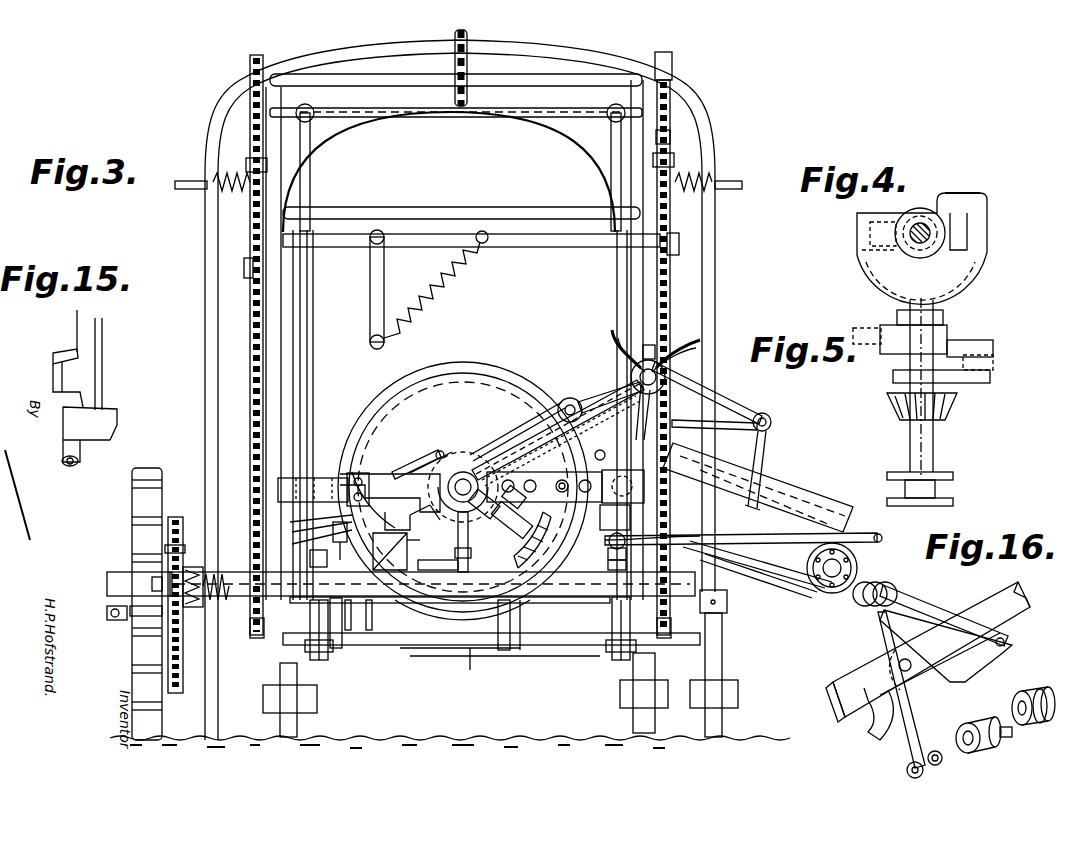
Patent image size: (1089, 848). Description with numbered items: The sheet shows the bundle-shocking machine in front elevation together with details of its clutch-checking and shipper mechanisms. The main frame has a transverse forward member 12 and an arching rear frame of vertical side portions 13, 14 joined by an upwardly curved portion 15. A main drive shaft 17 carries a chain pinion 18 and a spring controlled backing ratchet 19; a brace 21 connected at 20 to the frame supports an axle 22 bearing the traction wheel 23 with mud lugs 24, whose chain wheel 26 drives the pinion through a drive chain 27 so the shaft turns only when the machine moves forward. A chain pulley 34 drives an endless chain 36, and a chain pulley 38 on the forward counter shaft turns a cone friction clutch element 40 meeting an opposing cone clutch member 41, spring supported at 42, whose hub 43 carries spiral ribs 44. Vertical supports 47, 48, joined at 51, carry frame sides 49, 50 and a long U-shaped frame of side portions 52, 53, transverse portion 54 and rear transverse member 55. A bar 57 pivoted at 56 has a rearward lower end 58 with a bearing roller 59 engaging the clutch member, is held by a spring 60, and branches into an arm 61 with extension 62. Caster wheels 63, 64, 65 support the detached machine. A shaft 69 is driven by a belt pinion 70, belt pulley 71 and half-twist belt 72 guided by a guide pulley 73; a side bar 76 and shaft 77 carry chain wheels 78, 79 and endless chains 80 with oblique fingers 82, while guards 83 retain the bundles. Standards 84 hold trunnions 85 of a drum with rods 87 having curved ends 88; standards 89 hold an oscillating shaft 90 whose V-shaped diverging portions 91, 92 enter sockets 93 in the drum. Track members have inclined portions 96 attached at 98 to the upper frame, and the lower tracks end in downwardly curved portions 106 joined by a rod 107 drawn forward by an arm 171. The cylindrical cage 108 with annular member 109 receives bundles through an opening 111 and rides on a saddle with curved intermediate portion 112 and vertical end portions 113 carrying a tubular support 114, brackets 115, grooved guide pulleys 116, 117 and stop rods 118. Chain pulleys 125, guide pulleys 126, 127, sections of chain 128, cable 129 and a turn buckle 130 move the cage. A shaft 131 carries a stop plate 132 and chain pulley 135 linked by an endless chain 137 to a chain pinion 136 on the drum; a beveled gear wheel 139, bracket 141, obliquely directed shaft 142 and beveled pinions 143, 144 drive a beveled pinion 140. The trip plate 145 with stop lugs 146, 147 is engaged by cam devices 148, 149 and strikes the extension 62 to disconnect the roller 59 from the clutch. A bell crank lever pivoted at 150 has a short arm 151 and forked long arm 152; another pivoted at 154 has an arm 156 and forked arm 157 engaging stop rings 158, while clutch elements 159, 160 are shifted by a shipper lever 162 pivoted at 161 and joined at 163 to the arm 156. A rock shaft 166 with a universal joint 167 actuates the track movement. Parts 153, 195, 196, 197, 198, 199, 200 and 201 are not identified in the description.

In FIG. 3, the transverse forward member 12 is at (676, 572).
In FIG. 3, the vertical side portion 13 is at (715, 292).
In FIG. 3, the vertical side portion 14 is at (205, 346).
In FIG. 3, the transverse upwardly curved portion 15 is at (590, 54).
In FIG. 3, the main drive shaft 17 is at (228, 600).
In FIG. 3, the chain pinion 18 is at (186, 566).
In FIG. 3, the spring controlled backing ratchet 19 is at (190, 604).
In FIG. 3, the brace connection 20 is at (152, 585).
In FIG. 3, the brace 21 is at (107, 590).
In FIG. 3, the axle 22 is at (118, 620).
In FIG. 3, the traction or bearing wheel 23 is at (132, 523).
In FIG. 3, the mud lugs 24 is at (132, 494).
In FIG. 3, the chain wheel 26 is at (183, 528).
In FIG. 3, the drive chain 27 is at (184, 548).
In FIG. 3, the chain pulley 34 is at (470, 556).
In FIG. 3, the endless chain 36 is at (453, 542).
In FIG. 3, the chain pulley 38 is at (310, 558).
In FIG. 3, the cone friction clutch element 40 is at (416, 537).
In FIG. 3, the opposing cone friction clutch member 41 is at (390, 544).
In FIG. 3, the spring 42 is at (438, 557).
In FIG. 3, the hub 43 is at (348, 630).
In FIG. 3, the spiral ribs 44 is at (370, 630).
In FIG. 3, the vertical support 47 is at (620, 296).
In FIG. 3, the vertical support 48 is at (302, 336).
In FIG. 3, the side 49 is at (320, 478).
In FIG. 3, the side 50 is at (365, 475).
In FIG. 16, the side 50 is at (846, 682).
In FIG. 3, the upper connecting portion 51 is at (512, 207).
In FIG. 3, the side portion 52 is at (604, 140).
In FIG. 3, the side portion 53 is at (326, 142).
In FIG. 3, the transverse portion 54 is at (540, 247).
In FIG. 3, the transverse member 55 is at (566, 104).
In FIG. 3, the pivot 56 is at (370, 242).
In FIG. 3, the bar 57 is at (370, 287).
In FIG. 15, the bar 57 is at (98, 340).
In FIG. 3, the rearwardly directed lower end 58 is at (397, 517).
In FIG. 15, the rearwardly directed lower end 58 is at (88, 432).
In FIG. 3, the bearing roller 59 is at (329, 531).
In FIG. 3, the spring 60 is at (430, 296).
In FIG. 3, the arm 61 is at (420, 512).
In FIG. 15, the arm 61 is at (58, 378).
In FIG. 3, the forwardly directed extension 62 is at (439, 514).
In FIG. 15, the forwardly directed extension 62 is at (60, 352).
In FIG. 3, the caster wheel 63 is at (728, 611).
In FIG. 3, the caster wheel 64 is at (633, 715).
In FIG. 3, the caster wheel 65 is at (298, 716).
In FIG. 3, the shaft 69 is at (632, 503).
In FIG. 3, the belt pinion 70 is at (634, 564).
In FIG. 16, the belt pinion 70 is at (1034, 692).
In FIG. 3, the belt pulley 71 is at (601, 448).
In FIG. 3, the belt 72 is at (634, 553).
In FIG. 3, the guide pulley 73 is at (611, 550).
In FIG. 3, the side bar 76 is at (760, 585).
In FIG. 3, the shaft 77 is at (834, 588).
In FIG. 3, the chain wheel 78 is at (630, 518).
In FIG. 3, the chain wheel 79 is at (850, 560).
In FIG. 3, the endless chains 80 is at (758, 580).
In FIG. 3, the fingers 82 is at (805, 492).
In FIG. 3, the guide boards or guards 83 is at (780, 480).
In FIG. 3, the standards 84 is at (660, 408).
In FIG. 3, the trunnions 85 is at (665, 382).
In FIG. 3, the fingers or rods 87 is at (614, 345).
In FIG. 3, the curved outer ends 88 is at (612, 330).
In FIG. 3, the standards 89 is at (772, 452).
In FIG. 3, the shaft 90 is at (768, 418).
In FIG. 3, the diverging portion 91 is at (738, 398).
In FIG. 3, the diverging portion 92 is at (714, 417).
In FIG. 3, the sockets 93 is at (652, 344).
In FIG. 3, the inclined portion 96 is at (314, 395).
In FIG. 3, the attachment 98 is at (310, 112).
In FIG. 3, the downwardly curved portions 106 is at (305, 646).
In FIG. 3, the rod 107 is at (440, 650).
In FIG. 3, the cage 108 is at (484, 370).
In FIG. 3, the annular member 109 is at (444, 372).
In FIG. 3, the opening 111 is at (522, 410).
In FIG. 3, the curved intermediate portion 112 is at (504, 650).
In FIG. 3, the vertical end portions 113 is at (454, 573).
In FIG. 3, the tubular support 114 is at (455, 656).
In FIG. 3, the brackets 115 is at (461, 638).
In FIG. 3, the grooved guide pulley 116 is at (310, 620).
In FIG. 3, the grooved guide pulley 117 is at (312, 633).
In FIG. 3, the stop rod 118 is at (540, 660).
In FIG. 3, the chain pulleys 125 is at (680, 622).
In FIG. 3, the guide pulleys 126 is at (673, 68).
In FIG. 3, the guide pulleys 127 is at (251, 262).
In FIG. 3, the sections of chain 128 is at (255, 315).
In FIG. 3, the section of cable 129 is at (676, 135).
In FIG. 3, the turn buckle 130 is at (250, 164).
In FIG. 3, the shaft 131 is at (461, 478).
In FIG. 4, the shaft 131 is at (923, 223).
In FIG. 5, the shaft 131 is at (936, 332).
In FIG. 3, the stop plate 132 is at (500, 400).
In FIG. 3, the chain pulley 135 is at (559, 438).
In FIG. 3, the chain pinion 136 is at (620, 380).
In FIG. 3, the endless chain 137 is at (538, 403).
In FIG. 3, the beveled gear wheel 139 is at (520, 600).
In FIG. 5, the beveled pinion 140 is at (887, 410).
In FIG. 3, the bracket 141 is at (514, 496).
In FIG. 3, the obliquely directed shaft 142 is at (511, 519).
In FIG. 3, the beveled pinion 143 is at (483, 512).
In FIG. 3, the beveled pinion 144 is at (528, 548).
In FIG. 3, the plate 145 is at (430, 496).
In FIG. 4, the plate 145 is at (975, 272).
In FIG. 5, the plate 145 is at (967, 345).
In FIG. 4, the stop lug 146 is at (987, 237).
In FIG. 5, the stop lug 146 is at (993, 362).
In FIG. 4, the stop lug 147 is at (857, 237).
In FIG. 5, the stop lug 147 is at (855, 326).
In FIG. 4, the cam device 148 is at (860, 270).
In FIG. 5, the cam device 148 is at (905, 312).
In FIG. 4, the cam device 149 is at (968, 193).
In FIG. 5, the cam device 149 is at (970, 383).
In FIG. 3, the pivot 150 is at (416, 453).
In FIG. 3, the short arm 151 is at (423, 450).
In FIG. 3, the long arm 152 is at (435, 455).
In FIG. 3, the bolt 153 is at (544, 483).
In FIG. 3, the pivot 154 is at (548, 434).
In FIG. 16, the pivot 154 is at (1010, 640).
In FIG. 16, the arm 156 is at (928, 606).
In FIG. 3, the arm 157 is at (562, 443).
In FIG. 16, the arm 157 is at (966, 686).
In FIG. 5, the stop rings 158 is at (953, 488).
In FIG. 16, the clutch element 159 is at (1003, 745).
In FIG. 16, the opposing clutch element 160 is at (1025, 735).
In FIG. 16, the pivot 161 is at (912, 662).
In FIG. 16, the shipper lever 162 is at (882, 626).
In FIG. 3, the pivot 163 is at (561, 492).
In FIG. 16, the pivot 163 is at (880, 582).
In FIG. 3, the rock shaft 166 is at (868, 534).
In FIG. 3, the universal joint 167 is at (680, 540).
In FIG. 3, the arm 171 is at (472, 669).
In FIG. 3, the bar 195 is at (508, 118).
In FIG. 3, the chain 196 is at (468, 60).
In FIG. 3, the spring 197 is at (214, 168).
In FIG. 3, the lever 198 is at (352, 470).
In FIG. 3, the rod 199 is at (309, 517).
In FIG. 3, the rod 200 is at (309, 539).
In FIG. 3, the rod 201 is at (309, 528).